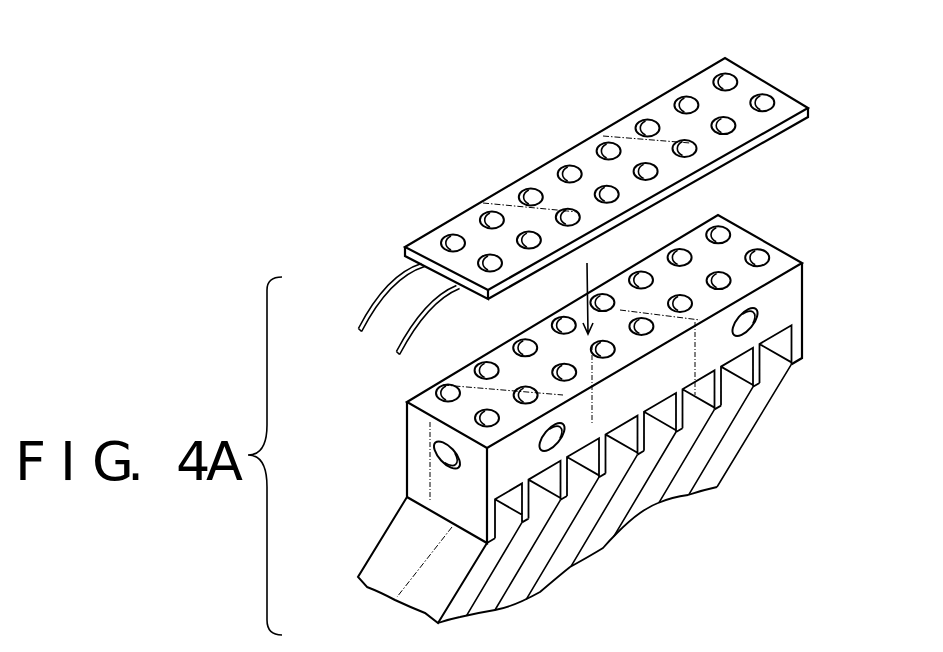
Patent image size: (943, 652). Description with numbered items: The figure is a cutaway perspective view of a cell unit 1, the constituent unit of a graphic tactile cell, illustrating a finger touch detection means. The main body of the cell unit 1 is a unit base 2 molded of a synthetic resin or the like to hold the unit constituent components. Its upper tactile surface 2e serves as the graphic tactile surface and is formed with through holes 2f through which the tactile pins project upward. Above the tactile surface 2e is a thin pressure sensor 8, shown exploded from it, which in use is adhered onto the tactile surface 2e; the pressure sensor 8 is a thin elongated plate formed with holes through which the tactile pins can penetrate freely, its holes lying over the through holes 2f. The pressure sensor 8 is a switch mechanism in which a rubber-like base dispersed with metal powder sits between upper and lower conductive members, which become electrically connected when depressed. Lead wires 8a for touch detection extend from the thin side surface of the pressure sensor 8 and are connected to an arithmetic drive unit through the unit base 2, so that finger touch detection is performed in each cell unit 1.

The cell unit 1 is at (828, 173).
The unit base 2 is at (395, 577).
The tactile surface 2e is at (696, 277).
The through holes 2f is at (653, 277).
The pressure sensor 8 is at (672, 143).
The lead wires 8a is at (400, 340).